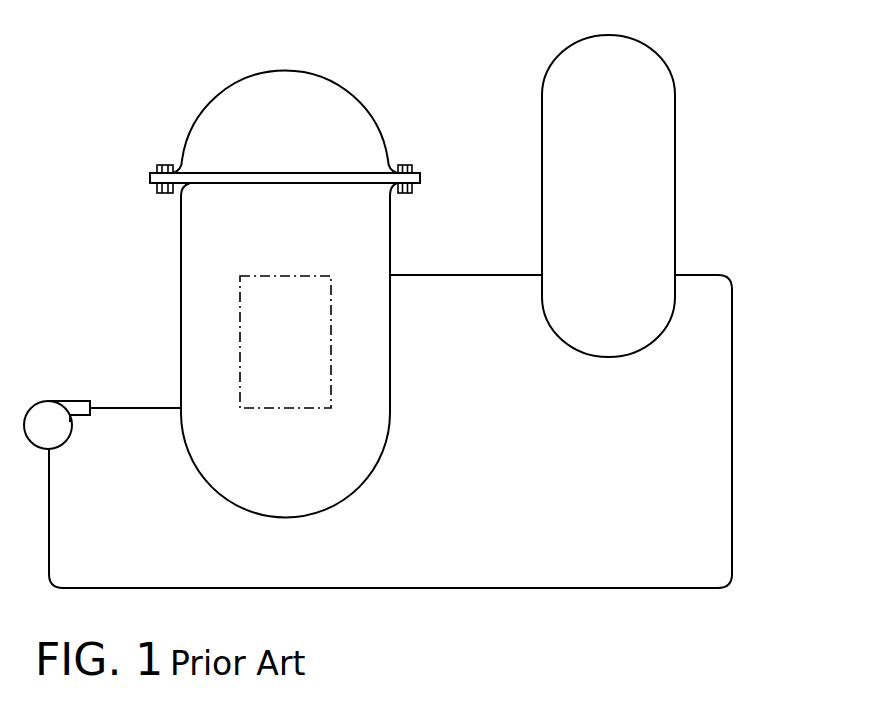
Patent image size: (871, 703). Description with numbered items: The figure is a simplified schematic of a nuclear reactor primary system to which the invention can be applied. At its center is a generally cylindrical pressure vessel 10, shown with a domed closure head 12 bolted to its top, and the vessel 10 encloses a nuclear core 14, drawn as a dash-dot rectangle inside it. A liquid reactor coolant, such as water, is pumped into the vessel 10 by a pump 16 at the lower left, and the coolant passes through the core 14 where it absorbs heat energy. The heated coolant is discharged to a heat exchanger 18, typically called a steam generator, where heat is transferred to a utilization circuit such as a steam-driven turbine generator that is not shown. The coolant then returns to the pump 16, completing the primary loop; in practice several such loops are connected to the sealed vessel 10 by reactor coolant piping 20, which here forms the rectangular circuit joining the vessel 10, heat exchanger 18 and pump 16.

The pressure vessel 10 is at (286, 288).
The closure head 12 is at (193, 120).
The nuclear core 14 is at (238, 330).
The pump 16 is at (44, 401).
The heat exchanger 18 is at (678, 135).
The reactor coolant piping 20 is at (732, 520).